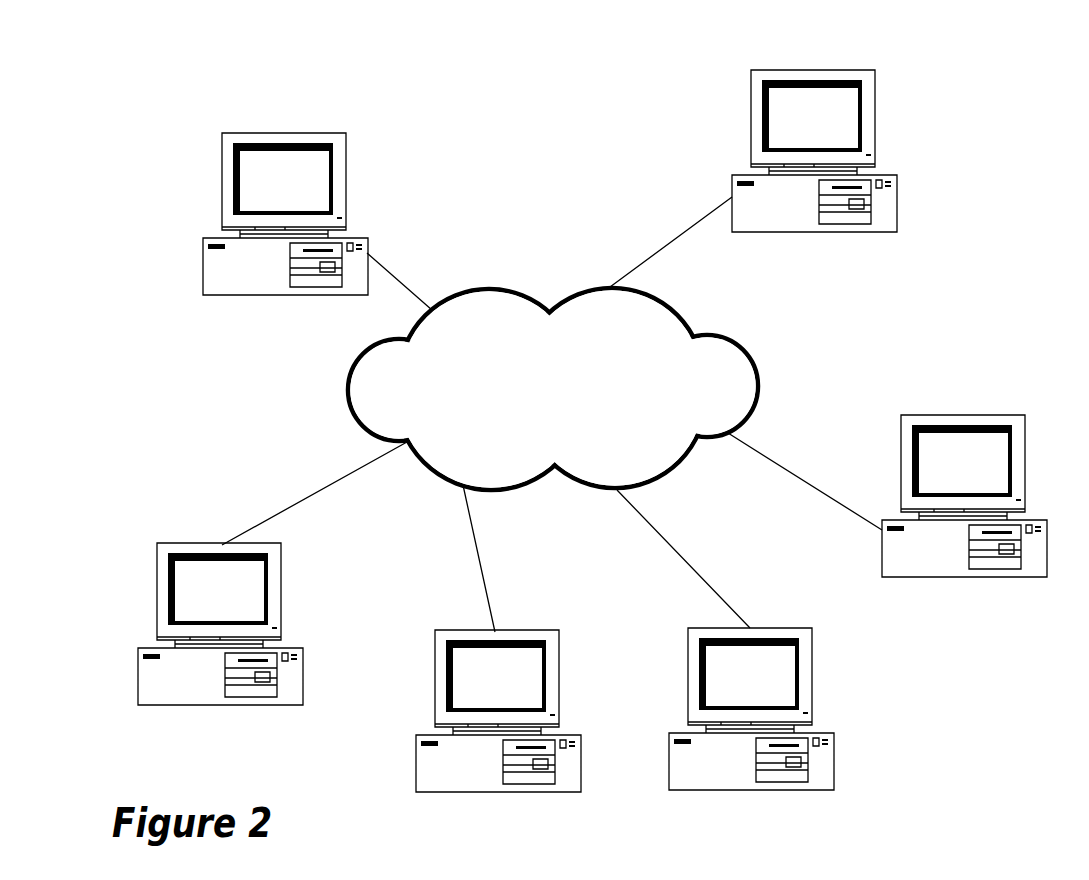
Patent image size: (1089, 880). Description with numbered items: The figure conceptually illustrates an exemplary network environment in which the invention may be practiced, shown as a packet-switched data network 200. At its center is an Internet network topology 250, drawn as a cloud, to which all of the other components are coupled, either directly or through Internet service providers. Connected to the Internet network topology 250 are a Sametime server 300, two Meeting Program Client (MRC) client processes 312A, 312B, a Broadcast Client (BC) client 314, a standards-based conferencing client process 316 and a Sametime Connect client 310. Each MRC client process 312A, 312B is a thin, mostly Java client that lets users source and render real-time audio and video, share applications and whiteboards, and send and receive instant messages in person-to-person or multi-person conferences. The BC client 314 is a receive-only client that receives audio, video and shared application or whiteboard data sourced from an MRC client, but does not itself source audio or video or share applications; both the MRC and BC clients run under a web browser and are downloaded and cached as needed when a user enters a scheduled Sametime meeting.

The packet-switched data network 200 is at (511, 68).
The Internet network topology 250 is at (492, 288).
The Sametime server 300 is at (202, 265).
The Sametime Connect client 310 is at (835, 767).
The Meeting Program Client (MRC) client process 312A is at (138, 685).
The Meeting Program Client (MRC) client process 312B is at (417, 768).
The Broadcast Client (BC) client 314 is at (882, 553).
The H.323 client process 316 is at (892, 213).